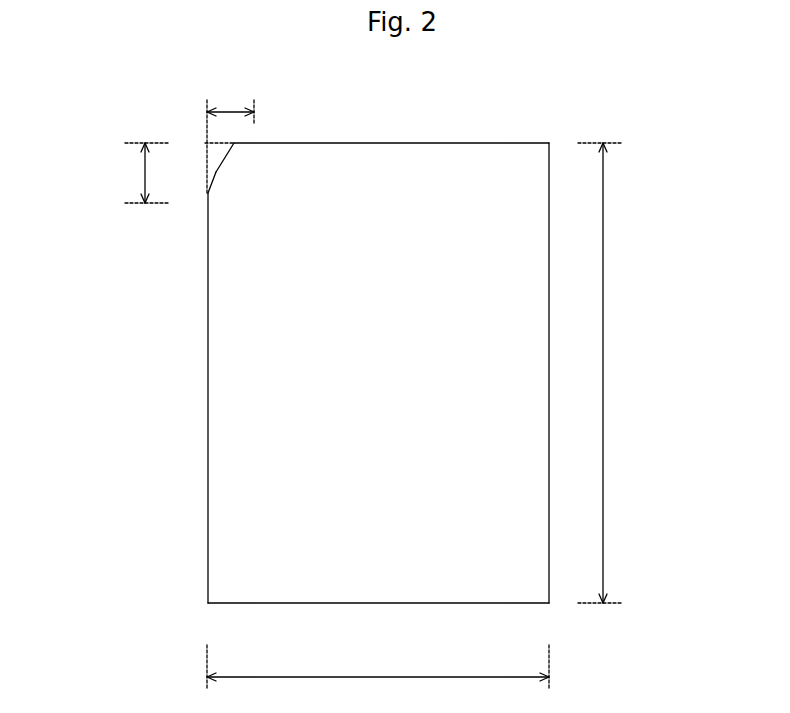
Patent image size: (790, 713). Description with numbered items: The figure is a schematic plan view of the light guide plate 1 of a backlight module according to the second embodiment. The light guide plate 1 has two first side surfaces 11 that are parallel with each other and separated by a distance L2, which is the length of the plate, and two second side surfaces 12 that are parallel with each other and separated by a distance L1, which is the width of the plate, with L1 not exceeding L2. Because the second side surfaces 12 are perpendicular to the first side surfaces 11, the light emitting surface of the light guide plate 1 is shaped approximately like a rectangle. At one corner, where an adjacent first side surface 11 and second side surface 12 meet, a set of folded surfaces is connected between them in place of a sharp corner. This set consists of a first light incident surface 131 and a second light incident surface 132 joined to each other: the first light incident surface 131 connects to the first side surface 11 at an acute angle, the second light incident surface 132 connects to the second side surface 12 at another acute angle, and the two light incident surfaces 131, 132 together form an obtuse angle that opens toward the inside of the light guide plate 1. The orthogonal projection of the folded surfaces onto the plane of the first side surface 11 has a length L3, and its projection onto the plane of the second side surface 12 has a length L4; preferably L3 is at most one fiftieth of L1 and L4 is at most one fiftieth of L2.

The light guide plate 1 is at (337, 334).
The first side surface 11 is at (380, 143).
The second side surface 12 is at (207, 507).
The first light incident surface 131 is at (247, 144).
The second light incident surface 132 is at (217, 180).
The width of light guide plate L1 is at (378, 666).
The length of light guide plate L2 is at (613, 373).
The projected length of folded surfaces on first side surface plane L3 is at (230, 130).
The projected length of folded surfaces on second side surface plane L4 is at (173, 173).